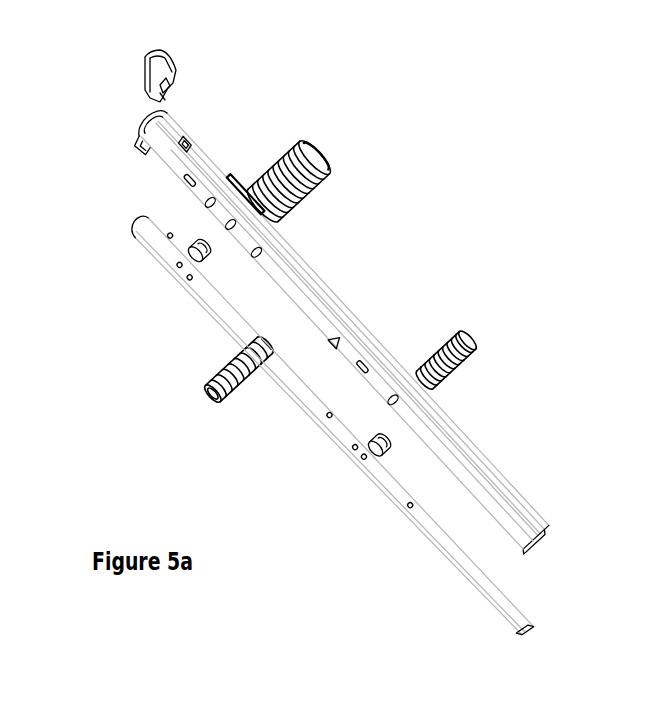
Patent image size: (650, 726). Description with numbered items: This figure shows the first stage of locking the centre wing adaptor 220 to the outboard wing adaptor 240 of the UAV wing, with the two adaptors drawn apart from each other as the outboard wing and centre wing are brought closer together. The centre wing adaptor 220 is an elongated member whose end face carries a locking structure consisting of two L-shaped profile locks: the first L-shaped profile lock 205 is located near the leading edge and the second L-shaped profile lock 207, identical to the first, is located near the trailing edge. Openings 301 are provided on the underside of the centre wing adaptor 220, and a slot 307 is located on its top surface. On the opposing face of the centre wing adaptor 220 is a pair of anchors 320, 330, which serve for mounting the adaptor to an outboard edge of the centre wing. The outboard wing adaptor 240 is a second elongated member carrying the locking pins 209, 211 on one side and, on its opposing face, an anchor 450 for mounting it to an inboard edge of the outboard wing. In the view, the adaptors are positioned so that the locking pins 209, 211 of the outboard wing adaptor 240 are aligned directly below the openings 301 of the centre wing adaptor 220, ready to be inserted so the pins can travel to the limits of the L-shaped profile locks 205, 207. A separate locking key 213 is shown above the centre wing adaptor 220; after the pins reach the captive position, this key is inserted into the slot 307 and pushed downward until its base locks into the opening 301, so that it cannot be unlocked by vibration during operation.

The locking key 213 is at (148, 63).
The slot 307 is at (183, 142).
The first L-shaped profile lock 205 is at (175, 167).
The opening 301 is at (167, 168).
The anchor 320 is at (298, 192).
The locking pin 209 is at (213, 248).
The second L-shaped profile lock 207 is at (347, 345).
The anchor 330 is at (448, 347).
The anchor 450 is at (243, 373).
The locking pin 211 is at (392, 448).
The centre wing adaptor 220 is at (526, 497).
The outboard wing adaptor 240 is at (522, 625).